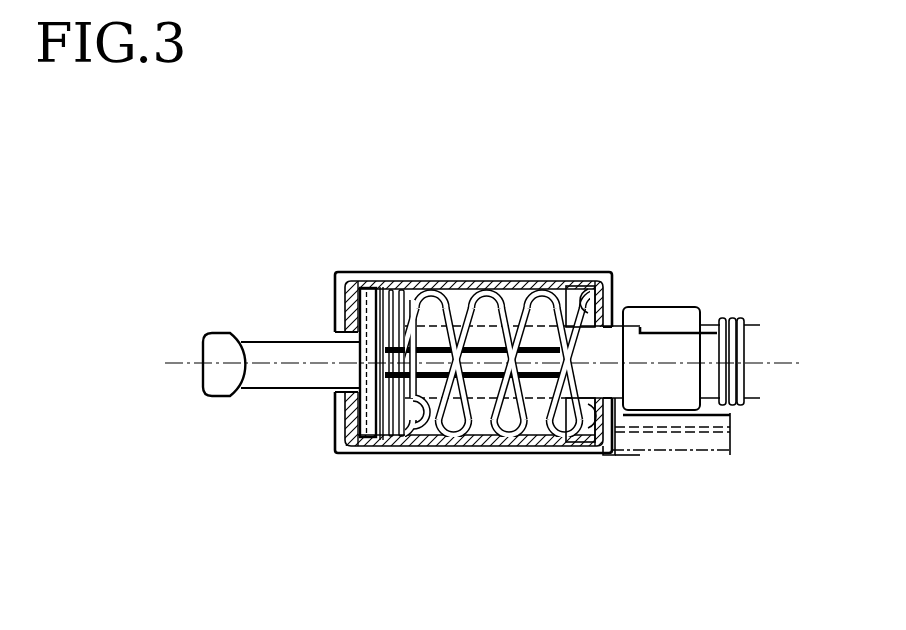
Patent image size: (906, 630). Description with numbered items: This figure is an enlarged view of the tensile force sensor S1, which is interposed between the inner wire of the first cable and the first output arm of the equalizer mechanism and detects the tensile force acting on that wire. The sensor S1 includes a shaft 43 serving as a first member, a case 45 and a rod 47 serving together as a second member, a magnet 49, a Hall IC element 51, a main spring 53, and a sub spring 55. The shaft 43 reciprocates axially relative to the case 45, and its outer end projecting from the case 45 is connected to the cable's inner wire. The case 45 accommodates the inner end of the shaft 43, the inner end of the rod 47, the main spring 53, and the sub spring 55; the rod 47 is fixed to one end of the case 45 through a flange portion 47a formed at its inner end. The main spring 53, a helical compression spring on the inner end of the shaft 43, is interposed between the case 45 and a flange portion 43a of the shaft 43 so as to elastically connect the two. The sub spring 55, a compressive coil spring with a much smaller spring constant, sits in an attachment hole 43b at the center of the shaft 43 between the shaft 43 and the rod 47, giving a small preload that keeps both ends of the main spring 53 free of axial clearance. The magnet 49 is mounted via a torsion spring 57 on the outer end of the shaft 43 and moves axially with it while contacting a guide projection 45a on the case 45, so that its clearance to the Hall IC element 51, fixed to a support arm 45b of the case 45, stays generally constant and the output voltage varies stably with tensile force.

The shaft 43 is at (604, 342).
The flange portion 43a is at (402, 432).
The attachment hole 43b is at (530, 300).
The case 45 is at (512, 300).
The guide projection 45a is at (745, 414).
The support arm 45b is at (640, 455).
The rod 47 is at (268, 381).
The flange portion 47a is at (372, 283).
The magnet 49 is at (678, 350).
The Hall IC element 51 is at (688, 443).
The main spring 53 is at (484, 300).
The sub spring 55 is at (455, 380).
The torsion spring 57 is at (744, 346).
The tensile force sensor S1 is at (425, 262).